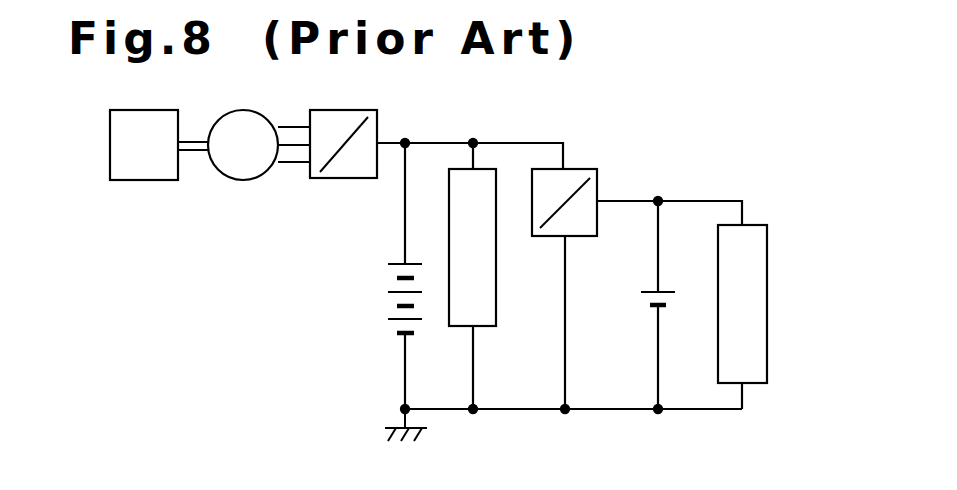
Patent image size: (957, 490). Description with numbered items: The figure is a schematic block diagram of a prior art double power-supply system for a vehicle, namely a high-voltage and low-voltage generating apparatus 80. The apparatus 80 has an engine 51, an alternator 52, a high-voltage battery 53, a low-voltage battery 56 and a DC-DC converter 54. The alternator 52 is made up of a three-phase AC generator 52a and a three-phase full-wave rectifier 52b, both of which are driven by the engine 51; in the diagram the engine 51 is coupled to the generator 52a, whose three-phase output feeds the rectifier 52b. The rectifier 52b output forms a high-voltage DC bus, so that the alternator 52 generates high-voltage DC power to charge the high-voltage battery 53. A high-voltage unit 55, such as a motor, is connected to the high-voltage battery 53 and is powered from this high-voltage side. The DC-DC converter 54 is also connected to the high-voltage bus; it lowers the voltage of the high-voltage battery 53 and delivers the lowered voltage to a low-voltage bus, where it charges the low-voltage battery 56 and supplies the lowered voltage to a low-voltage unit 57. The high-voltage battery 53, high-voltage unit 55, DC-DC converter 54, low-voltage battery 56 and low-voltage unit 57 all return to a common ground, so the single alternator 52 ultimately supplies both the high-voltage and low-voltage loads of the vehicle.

The high-voltage and low-voltage generating apparatus 80 is at (741, 133).
The engine 51 is at (150, 180).
The alternator 52 is at (292, 197).
The three-phase AC generator 52a is at (243, 180).
The three-phase full-wave rectifier 52b is at (337, 172).
The high-voltage battery 53 is at (395, 323).
The DC-DC converter 54 is at (590, 169).
The high-voltage unit 55 is at (497, 292).
The low-voltage battery 56 is at (652, 292).
The low-voltage unit 57 is at (767, 262).